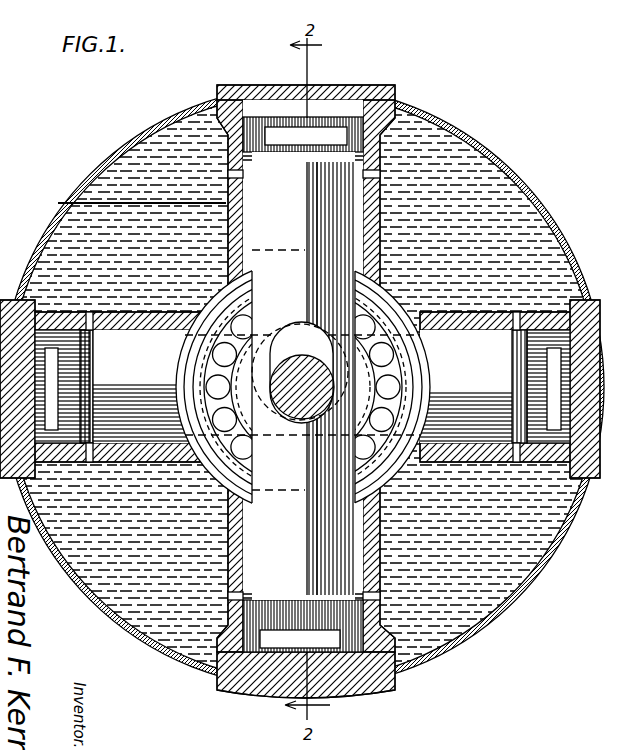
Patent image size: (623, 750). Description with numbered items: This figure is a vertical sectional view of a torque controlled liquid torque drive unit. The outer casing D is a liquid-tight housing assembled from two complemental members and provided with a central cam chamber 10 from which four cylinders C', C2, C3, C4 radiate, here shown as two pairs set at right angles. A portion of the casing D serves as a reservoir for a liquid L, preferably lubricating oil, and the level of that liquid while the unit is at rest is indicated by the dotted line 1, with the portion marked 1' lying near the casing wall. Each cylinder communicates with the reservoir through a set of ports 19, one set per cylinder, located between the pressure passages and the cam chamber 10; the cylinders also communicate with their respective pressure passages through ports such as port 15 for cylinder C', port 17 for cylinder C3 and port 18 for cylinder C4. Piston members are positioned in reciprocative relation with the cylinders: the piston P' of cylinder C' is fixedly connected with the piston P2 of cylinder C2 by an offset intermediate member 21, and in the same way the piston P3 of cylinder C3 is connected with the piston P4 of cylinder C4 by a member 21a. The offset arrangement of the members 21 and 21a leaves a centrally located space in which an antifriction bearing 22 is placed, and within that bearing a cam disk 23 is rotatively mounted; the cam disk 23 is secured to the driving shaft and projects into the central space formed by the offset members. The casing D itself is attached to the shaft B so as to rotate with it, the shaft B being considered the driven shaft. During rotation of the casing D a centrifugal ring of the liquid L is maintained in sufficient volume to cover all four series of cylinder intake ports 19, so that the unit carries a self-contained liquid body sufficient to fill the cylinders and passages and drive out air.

The casing D is at (503, 152).
The dotted line 1 is at (303, 387).
The casing wall portion 1' is at (127, 160).
The liquid L is at (122, 248).
The port 15 is at (331, 130).
The cylinder C' is at (315, 195).
The cylinder C2 is at (382, 548).
The cylinder C3 is at (477, 312).
The cylinder C4 is at (150, 312).
The piston P' is at (303, 172).
The piston P2 is at (303, 588).
The piston P3 is at (495, 386).
The piston P4 is at (117, 386).
The port 17 is at (54, 389).
The port 18 is at (547, 402).
The ports 19 is at (300, 180).
The central cam chamber 10 is at (394, 481).
The antifriction bearing 22 is at (228, 300).
The cam disk 23 is at (400, 350).
The offset intermediate member 21 is at (256, 453).
The offset intermediate member 21a is at (297, 324).
The shaft B is at (292, 420).